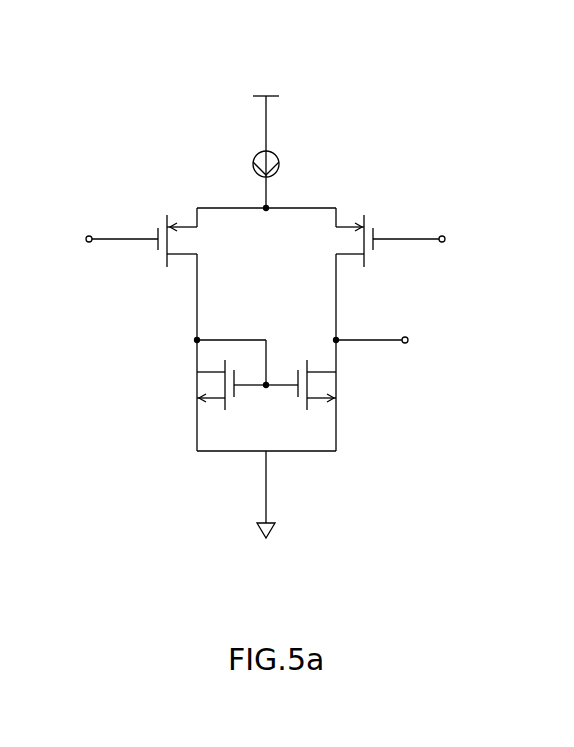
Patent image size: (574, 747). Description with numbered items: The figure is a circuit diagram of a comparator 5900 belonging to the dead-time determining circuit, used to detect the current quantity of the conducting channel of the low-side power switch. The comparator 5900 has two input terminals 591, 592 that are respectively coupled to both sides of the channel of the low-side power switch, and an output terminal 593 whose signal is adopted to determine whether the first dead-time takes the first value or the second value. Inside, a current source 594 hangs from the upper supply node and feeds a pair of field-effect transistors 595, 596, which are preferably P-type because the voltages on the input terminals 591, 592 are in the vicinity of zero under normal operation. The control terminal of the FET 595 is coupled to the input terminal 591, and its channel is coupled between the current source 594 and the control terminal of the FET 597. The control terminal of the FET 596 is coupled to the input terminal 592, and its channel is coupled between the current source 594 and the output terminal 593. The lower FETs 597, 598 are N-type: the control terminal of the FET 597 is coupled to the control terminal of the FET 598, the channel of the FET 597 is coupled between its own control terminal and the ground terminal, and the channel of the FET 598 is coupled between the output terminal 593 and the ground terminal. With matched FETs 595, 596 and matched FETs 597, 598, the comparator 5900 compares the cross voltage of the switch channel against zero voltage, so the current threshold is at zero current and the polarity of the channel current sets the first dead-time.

The comparator 5900 is at (392, 28).
The input terminal 591 is at (85, 239).
The input terminal 592 is at (446, 239).
The output terminal 593 is at (409, 339).
The current source 594 is at (279, 160).
The field-effect transistor 595 is at (186, 232).
The field-effect transistor 596 is at (352, 230).
The field-effect transistor 597 is at (205, 375).
The field-effect transistor 598 is at (330, 373).